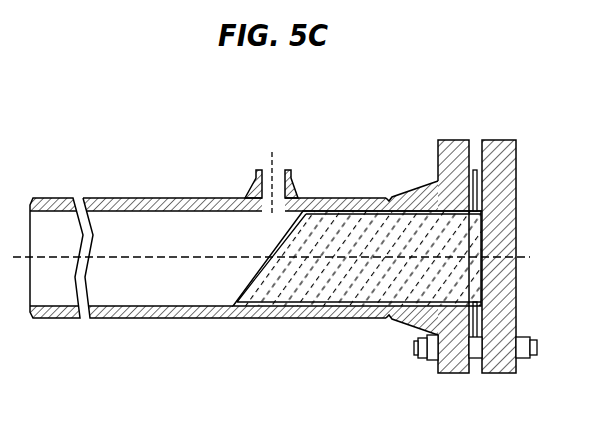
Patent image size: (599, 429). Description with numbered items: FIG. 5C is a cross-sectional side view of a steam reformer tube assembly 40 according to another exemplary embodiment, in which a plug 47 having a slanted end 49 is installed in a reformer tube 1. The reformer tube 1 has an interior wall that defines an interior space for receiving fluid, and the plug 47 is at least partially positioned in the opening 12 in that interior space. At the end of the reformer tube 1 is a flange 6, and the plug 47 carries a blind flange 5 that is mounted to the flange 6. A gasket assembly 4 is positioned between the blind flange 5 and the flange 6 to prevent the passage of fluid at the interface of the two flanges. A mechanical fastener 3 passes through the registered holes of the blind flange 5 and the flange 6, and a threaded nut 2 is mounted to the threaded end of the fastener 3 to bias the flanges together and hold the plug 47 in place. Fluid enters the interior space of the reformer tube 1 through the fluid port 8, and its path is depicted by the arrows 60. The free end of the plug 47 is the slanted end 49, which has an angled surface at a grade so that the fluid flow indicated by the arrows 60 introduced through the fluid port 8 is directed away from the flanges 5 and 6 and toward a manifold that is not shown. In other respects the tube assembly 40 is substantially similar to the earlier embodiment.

The reformer tube 1 is at (142, 198).
The threaded nut 2 is at (523, 330).
The mechanical fastener 3 is at (538, 347).
The gasket assembly 4 is at (486, 318).
The blind flange 5 is at (495, 140).
The flange 6 is at (457, 140).
The fluid port 8 is at (288, 170).
The opening 12 is at (470, 237).
The steam reformer tube assembly 40 is at (140, 136).
The plug 47 is at (357, 283).
The slanted end 49 is at (268, 246).
The arrows 60 is at (272, 146).